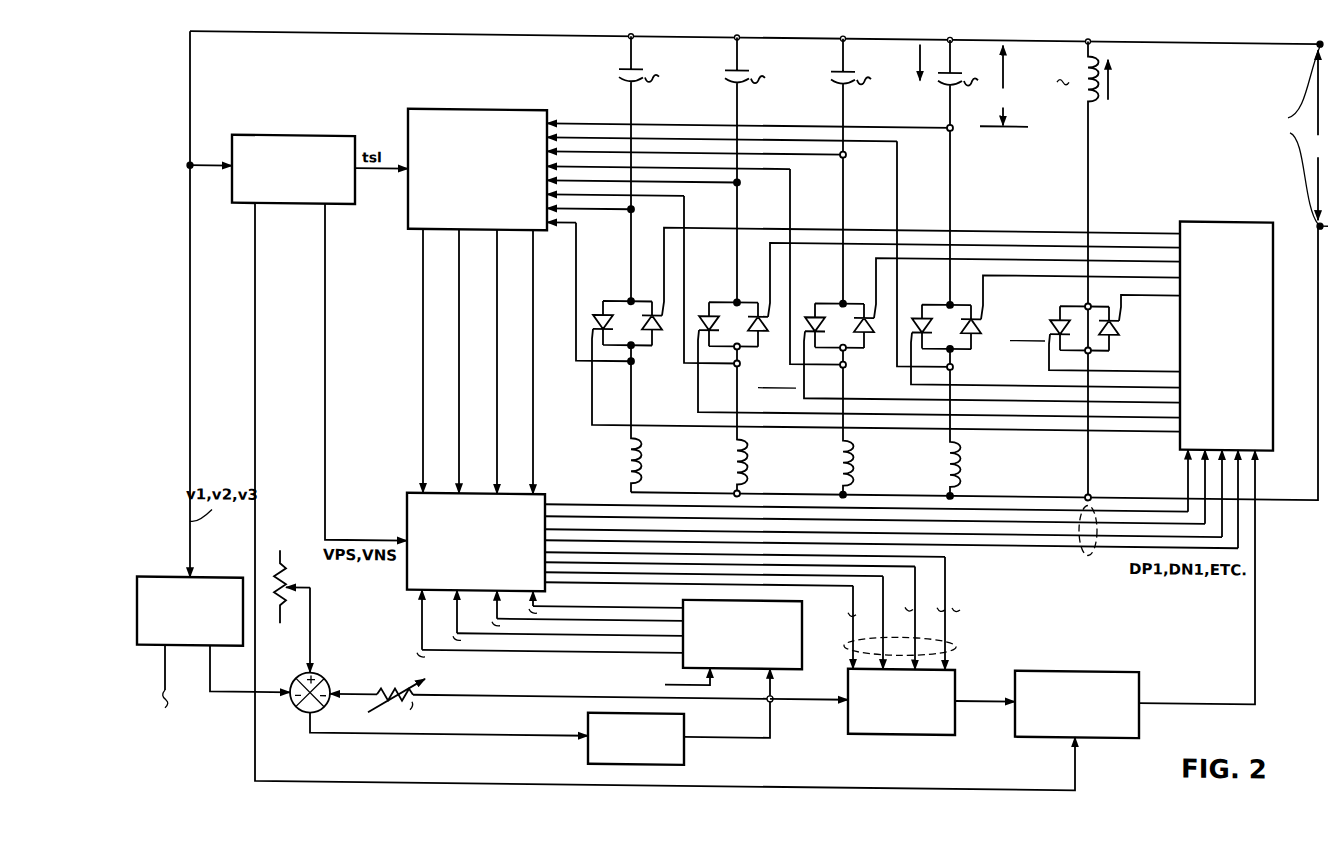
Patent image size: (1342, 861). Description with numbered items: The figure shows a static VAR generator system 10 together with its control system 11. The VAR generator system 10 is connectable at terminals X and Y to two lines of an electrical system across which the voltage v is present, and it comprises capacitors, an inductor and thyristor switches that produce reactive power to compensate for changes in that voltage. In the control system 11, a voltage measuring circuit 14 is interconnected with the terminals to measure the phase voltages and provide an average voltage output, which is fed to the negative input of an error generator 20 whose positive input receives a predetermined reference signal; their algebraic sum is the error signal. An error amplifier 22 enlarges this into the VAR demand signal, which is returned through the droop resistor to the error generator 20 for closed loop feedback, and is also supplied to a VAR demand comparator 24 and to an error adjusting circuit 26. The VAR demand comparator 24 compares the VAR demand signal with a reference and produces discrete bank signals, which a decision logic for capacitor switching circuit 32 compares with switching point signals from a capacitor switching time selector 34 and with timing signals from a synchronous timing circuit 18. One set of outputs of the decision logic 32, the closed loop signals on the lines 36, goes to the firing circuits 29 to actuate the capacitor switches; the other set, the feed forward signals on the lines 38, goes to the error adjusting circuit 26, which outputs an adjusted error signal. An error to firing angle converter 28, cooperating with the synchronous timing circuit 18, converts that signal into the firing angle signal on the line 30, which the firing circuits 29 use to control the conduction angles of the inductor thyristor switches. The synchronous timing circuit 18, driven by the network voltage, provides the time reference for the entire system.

The VAR generator system 10 is at (1004, 162).
The control system 11 is at (360, 376).
The voltage measuring circuit 14 is at (214, 575).
The synchronous timing circuit 18 is at (326, 132).
The error generator 20 is at (325, 678).
The error amplifier 22 is at (684, 706).
The VAR demand comparator 24 is at (802, 628).
The error adjusting circuit 26 is at (955, 661).
The error to firing angle converter 28 is at (1120, 659).
The firing circuits 29 is at (1227, 208).
The line 30 is at (1255, 578).
The decision logic for capacitor switching circuit 32 is at (547, 488).
The capacitor switching time selector 34 is at (510, 104).
The lines 36 is at (1088, 543).
The lines 38 is at (950, 638).